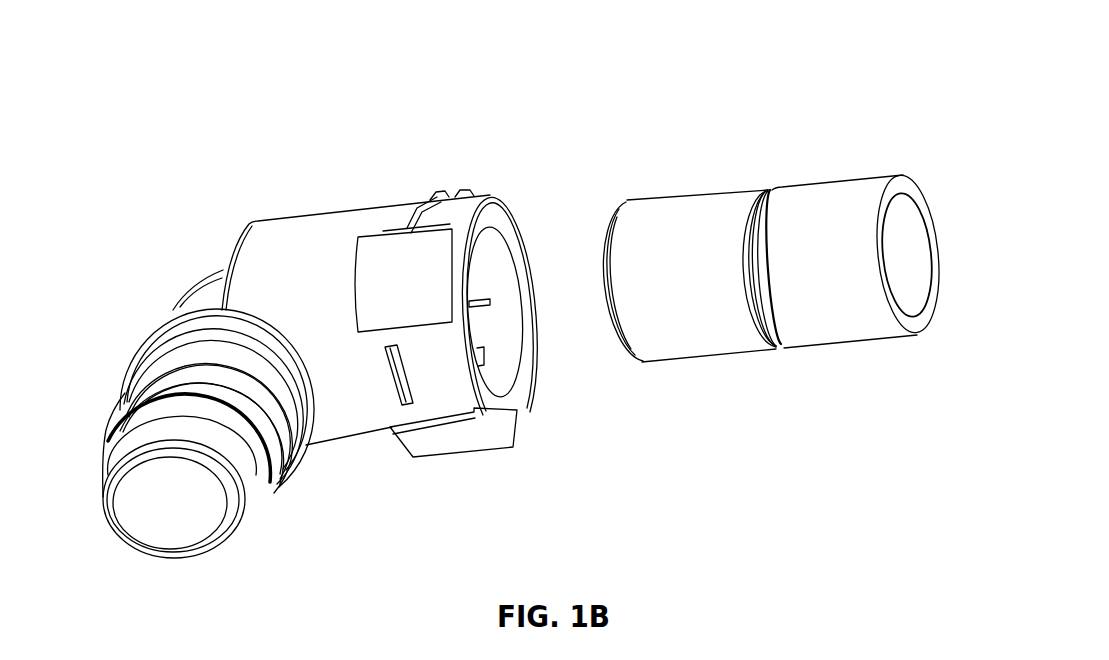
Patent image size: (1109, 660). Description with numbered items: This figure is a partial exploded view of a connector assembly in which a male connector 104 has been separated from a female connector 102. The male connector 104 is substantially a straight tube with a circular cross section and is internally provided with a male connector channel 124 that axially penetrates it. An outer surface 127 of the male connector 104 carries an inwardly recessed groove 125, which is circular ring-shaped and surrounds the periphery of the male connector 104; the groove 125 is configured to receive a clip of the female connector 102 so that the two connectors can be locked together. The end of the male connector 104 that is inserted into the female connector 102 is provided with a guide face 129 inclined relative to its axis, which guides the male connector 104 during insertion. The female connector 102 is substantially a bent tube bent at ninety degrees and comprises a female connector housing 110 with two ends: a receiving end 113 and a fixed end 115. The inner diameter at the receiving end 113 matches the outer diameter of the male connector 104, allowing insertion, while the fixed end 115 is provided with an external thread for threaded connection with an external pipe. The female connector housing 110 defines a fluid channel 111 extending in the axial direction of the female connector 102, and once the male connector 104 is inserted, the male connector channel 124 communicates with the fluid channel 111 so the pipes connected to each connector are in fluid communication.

The female connector 102 is at (165, 200).
The male connector 104 is at (805, 140).
The female connector housing 110 is at (335, 427).
The fluid channel 111 is at (517, 343).
The receiving end 113 is at (480, 198).
The fixed end 115 is at (247, 515).
The male connector channel 124 is at (917, 287).
The groove 125 is at (790, 347).
The outer surface 127 is at (887, 173).
The guide face 129 is at (613, 217).